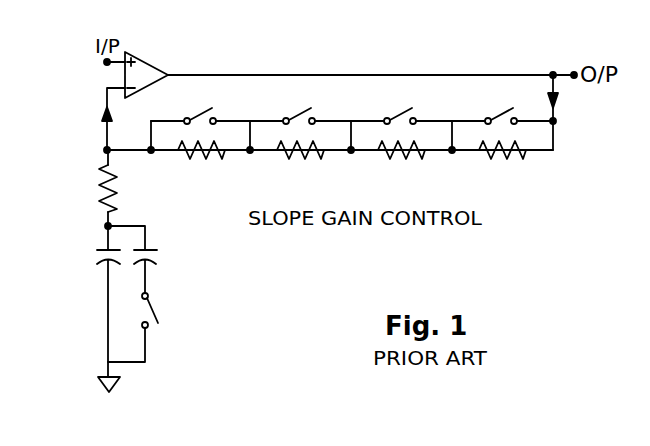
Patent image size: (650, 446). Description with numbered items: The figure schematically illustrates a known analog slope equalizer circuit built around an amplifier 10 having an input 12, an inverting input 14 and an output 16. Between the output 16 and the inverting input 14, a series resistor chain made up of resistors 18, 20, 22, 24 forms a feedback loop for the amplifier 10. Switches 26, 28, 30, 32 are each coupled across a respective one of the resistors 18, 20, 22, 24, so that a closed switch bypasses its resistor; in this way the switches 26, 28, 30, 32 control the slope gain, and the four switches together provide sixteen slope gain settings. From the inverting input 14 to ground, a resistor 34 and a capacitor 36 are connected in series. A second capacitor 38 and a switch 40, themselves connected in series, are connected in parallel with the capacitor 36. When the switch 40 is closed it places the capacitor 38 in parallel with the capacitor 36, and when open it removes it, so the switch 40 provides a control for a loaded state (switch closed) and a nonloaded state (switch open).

The amplifier 10 is at (152, 65).
The input 12 is at (106, 60).
The inverting input 14 is at (107, 88).
The output 16 is at (270, 75).
The resistor 18 is at (223, 158).
The resistor 20 is at (309, 158).
The resistor 22 is at (410, 157).
The resistor 24 is at (510, 157).
The switch 26 is at (214, 118).
The switch 28 is at (314, 118).
The switch 30 is at (414, 118).
The switch 32 is at (516, 118).
The resistor 34 is at (116, 200).
The capacitor 36 is at (100, 249).
The second capacitor 38 is at (152, 249).
The switch 40 is at (149, 295).